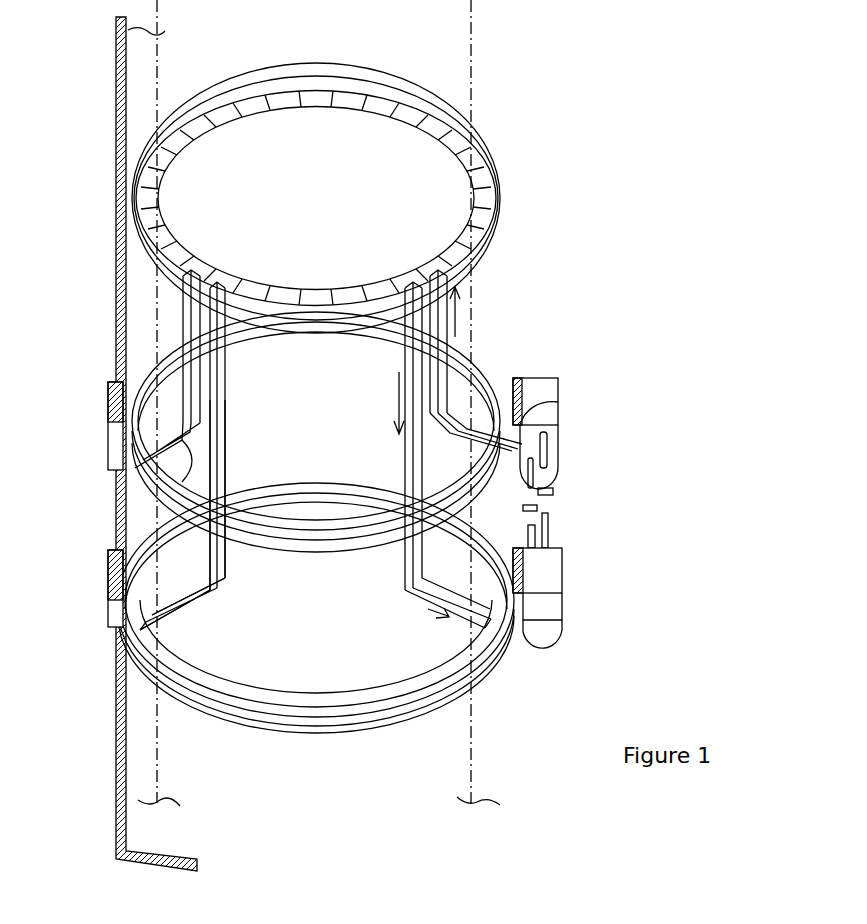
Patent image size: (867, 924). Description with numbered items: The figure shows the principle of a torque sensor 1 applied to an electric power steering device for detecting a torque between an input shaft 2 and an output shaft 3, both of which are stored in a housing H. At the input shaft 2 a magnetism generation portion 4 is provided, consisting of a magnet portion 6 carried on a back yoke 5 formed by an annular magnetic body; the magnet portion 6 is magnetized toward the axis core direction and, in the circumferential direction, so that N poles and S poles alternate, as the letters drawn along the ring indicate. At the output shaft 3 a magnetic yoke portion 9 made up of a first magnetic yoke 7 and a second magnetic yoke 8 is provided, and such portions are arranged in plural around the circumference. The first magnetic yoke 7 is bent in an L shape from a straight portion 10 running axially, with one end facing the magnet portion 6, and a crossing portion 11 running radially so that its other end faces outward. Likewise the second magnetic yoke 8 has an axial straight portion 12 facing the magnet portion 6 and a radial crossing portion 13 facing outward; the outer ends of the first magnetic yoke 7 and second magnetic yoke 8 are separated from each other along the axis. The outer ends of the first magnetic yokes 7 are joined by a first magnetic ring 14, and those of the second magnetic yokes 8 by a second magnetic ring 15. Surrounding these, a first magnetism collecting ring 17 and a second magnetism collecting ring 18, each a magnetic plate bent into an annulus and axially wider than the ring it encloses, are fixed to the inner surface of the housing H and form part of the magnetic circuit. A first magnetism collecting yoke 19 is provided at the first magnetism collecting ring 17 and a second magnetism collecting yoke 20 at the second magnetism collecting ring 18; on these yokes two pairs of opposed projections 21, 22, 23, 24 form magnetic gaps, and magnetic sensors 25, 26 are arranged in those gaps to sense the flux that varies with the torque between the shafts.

The torque sensor 1 is at (598, 183).
The input shaft 2 is at (453, 46).
The output shaft 3 is at (459, 738).
The magnetism generation portion 4 is at (522, 168).
The back yoke 5 is at (478, 123).
The magnet portion 6 is at (313, 97).
The first magnetic yoke 7 is at (420, 313).
The second magnetic yoke 8 is at (435, 285).
The magnetic yoke portion 9 is at (360, 449).
The straight portion 10 is at (248, 563).
The crossing portion 11 is at (183, 607).
The straight portion 12 is at (178, 303).
The crossing portion 13 is at (136, 487).
The first magnetic ring 14 is at (150, 627).
The second magnetic ring 15 is at (138, 460).
The first magnetism collecting ring 17 is at (567, 620).
The second magnetism collecting ring 18 is at (538, 413).
The first magnetism collecting yoke 19 is at (557, 574).
The second magnetism collecting yoke 20 is at (538, 386).
The projection 21 is at (548, 446).
The projection 22 is at (557, 550).
The projection 23 is at (470, 468).
The projection 24 is at (432, 553).
The magnetic sensor 25 is at (555, 492).
The magnetic sensor 26 is at (540, 508).
The housing H is at (112, 728).